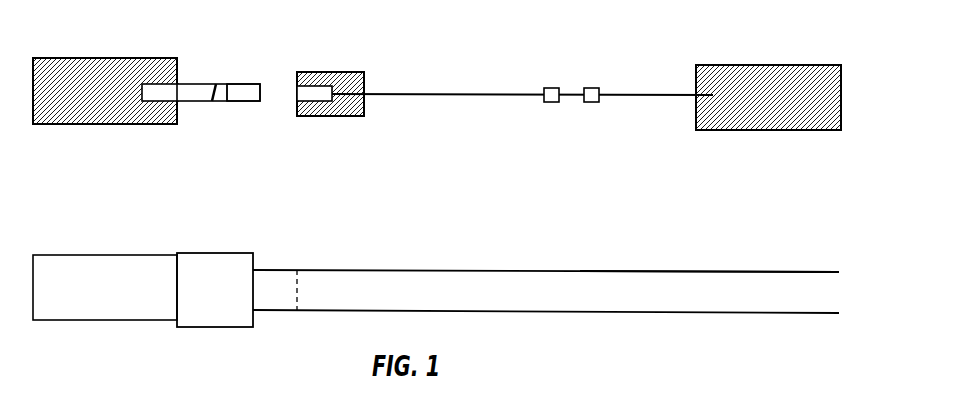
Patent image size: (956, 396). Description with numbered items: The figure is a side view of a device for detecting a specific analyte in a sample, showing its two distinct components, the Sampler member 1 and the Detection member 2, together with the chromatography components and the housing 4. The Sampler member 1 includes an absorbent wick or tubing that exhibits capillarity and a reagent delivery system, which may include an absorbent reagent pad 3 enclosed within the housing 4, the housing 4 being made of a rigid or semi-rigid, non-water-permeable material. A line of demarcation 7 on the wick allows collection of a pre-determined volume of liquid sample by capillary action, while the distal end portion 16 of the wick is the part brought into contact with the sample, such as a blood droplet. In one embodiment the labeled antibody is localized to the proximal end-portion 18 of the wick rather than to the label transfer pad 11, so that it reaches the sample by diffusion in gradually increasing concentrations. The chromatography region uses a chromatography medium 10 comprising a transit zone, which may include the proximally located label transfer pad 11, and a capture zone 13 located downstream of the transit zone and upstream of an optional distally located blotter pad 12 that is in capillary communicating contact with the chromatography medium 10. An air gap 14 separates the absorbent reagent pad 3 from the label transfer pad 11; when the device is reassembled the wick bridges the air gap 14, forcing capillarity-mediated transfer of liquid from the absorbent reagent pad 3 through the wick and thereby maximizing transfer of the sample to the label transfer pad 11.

The Sampler member 1 is at (93, 267).
The Detection member 2 is at (460, 278).
The absorbent reagent pad 3 is at (52, 65).
The housing 4 is at (597, 270).
The line of demarcation 7 is at (215, 85).
The chromatography medium 10 is at (387, 93).
The label transfer pad 11 is at (332, 72).
The blotter pad 12 is at (755, 65).
The capture zone 13 is at (589, 88).
The air gap 14 is at (277, 278).
The distal end portion 16 is at (248, 95).
The proximal end-portion 18 is at (149, 93).